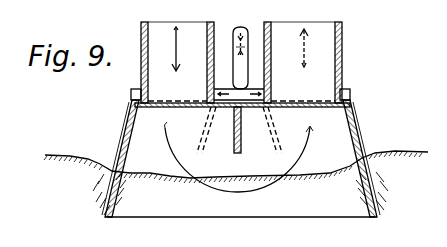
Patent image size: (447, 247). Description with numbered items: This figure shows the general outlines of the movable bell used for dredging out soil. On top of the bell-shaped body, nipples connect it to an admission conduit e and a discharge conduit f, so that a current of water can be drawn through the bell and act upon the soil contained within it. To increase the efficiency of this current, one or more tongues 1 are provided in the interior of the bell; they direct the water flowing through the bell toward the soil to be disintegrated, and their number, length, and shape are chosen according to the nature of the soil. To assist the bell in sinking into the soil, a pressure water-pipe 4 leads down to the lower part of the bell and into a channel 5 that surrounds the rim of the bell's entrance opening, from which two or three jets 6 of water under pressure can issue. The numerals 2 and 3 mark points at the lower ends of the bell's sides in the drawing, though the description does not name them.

The tongues 1 is at (208, 127).
The left leg foot 2 is at (104, 217).
The right leg foot 3 is at (378, 218).
The pressure water-pipe 4 is at (239, 66).
The channel 5 is at (108, 178).
The jets of water under pressure 6 is at (112, 212).
The admission conduit e is at (177, 62).
The discharge conduit f is at (303, 62).